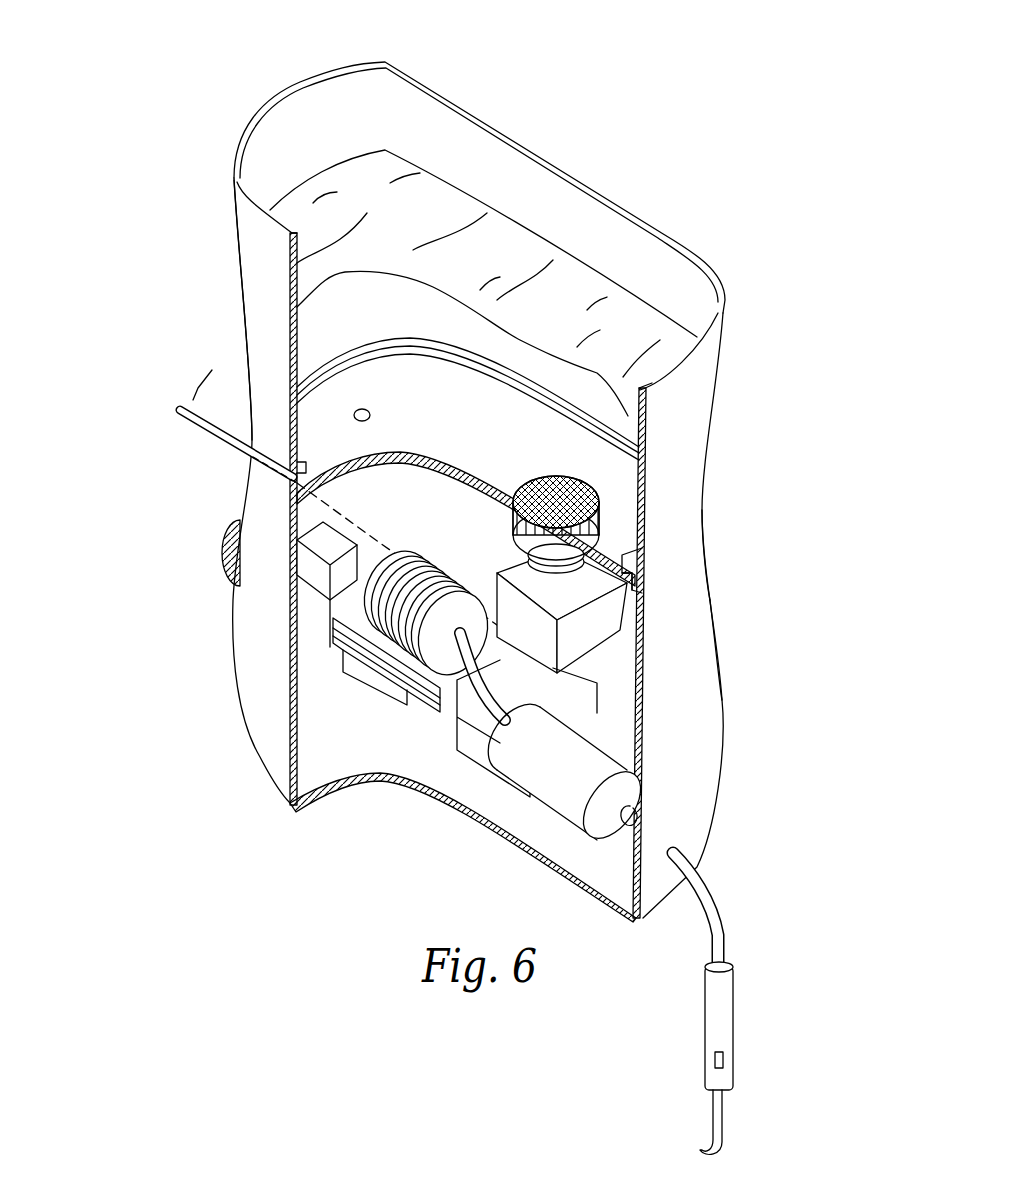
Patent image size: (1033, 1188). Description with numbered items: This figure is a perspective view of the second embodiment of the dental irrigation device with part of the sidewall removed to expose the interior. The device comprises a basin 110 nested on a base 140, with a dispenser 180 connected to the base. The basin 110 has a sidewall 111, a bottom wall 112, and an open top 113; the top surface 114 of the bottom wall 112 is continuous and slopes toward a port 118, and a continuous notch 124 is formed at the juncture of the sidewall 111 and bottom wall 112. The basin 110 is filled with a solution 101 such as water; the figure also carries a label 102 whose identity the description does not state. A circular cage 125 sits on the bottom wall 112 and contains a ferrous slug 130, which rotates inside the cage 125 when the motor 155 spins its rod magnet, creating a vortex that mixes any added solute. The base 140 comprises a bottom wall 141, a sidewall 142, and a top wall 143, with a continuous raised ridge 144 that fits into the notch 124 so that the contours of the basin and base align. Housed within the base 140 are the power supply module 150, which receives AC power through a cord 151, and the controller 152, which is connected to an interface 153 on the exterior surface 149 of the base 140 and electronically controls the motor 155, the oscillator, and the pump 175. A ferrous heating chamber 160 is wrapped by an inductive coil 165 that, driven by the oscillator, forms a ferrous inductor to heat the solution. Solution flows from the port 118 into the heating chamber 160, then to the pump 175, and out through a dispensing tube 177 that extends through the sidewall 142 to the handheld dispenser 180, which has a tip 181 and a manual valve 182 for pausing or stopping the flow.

The solution 101 is at (650, 104).
The wipes 102 is at (478, 294).
The basin 110 is at (320, 75).
The sidewall 111 is at (243, 283).
The bottom wall 112 is at (400, 367).
The open top 113 is at (522, 80).
The top surface 114 is at (456, 416).
The port 118 is at (353, 410).
The notch 124 is at (637, 570).
The circular cage 125 is at (593, 483).
The ferrous slug 130 is at (605, 510).
The base 140 is at (708, 573).
The bottom wall 141 is at (344, 740).
The sidewall 142 is at (721, 727).
The top wall 143 is at (470, 475).
The raised ridge 144 is at (647, 583).
The exterior surface 149 is at (262, 653).
The power supply module 150 is at (467, 747).
The cord 151 is at (183, 418).
The controller 152 is at (317, 647).
The interface 153 is at (224, 548).
The motor 155 is at (610, 627).
The heating chamber 160 is at (362, 600).
The inductive coil 165 is at (403, 700).
The pump 175 is at (613, 763).
The dispensing tube 177 is at (718, 900).
The dispenser 180 is at (737, 1017).
The tip 181 is at (723, 1130).
The manual valve 182 is at (723, 1060).